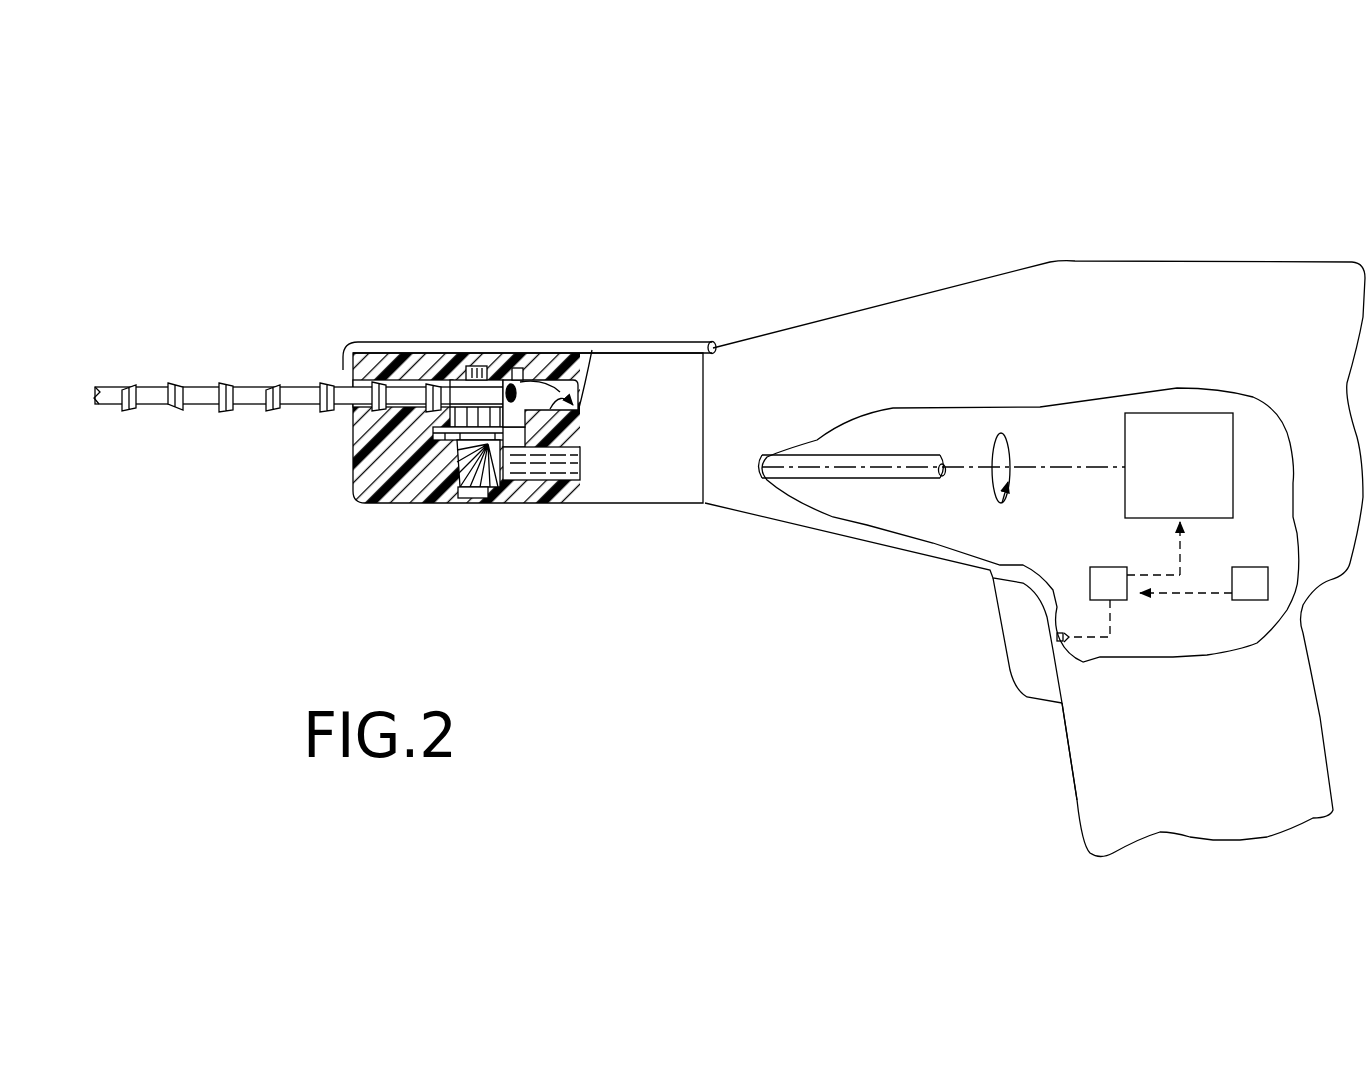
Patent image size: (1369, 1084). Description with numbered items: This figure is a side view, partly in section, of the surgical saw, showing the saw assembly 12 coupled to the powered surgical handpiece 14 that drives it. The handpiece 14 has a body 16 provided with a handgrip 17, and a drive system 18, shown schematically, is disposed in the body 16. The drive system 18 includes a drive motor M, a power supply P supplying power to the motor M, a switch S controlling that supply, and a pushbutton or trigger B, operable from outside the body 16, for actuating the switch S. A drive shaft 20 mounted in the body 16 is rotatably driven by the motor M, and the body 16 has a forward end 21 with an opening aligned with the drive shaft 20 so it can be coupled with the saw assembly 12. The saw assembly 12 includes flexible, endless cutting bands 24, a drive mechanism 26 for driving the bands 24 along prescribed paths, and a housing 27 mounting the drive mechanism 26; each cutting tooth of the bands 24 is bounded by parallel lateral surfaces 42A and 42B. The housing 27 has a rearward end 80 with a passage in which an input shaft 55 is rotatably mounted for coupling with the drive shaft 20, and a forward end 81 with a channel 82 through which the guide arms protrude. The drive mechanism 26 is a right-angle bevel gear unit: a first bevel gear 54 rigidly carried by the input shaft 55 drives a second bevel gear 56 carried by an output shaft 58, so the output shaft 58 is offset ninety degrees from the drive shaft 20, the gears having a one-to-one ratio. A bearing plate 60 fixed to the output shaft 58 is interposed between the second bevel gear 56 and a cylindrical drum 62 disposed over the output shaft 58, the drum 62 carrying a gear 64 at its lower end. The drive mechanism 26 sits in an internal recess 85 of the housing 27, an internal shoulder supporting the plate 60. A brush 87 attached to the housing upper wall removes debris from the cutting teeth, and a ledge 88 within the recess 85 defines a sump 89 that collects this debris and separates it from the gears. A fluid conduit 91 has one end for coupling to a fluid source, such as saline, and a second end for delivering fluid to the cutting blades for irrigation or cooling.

The saw assembly 12 is at (297, 512).
The powered surgical handpiece 14 is at (1168, 250).
The body 16 is at (1283, 300).
The handgrip 17 is at (1103, 755).
The drive system 18 is at (1115, 433).
The drive shaft 20 is at (863, 460).
The forward end 21 is at (737, 510).
The cutting bands 24 is at (197, 393).
The drive mechanism 26 is at (477, 490).
The housing 27 is at (683, 373).
The lateral surface 42A is at (225, 386).
The lateral surface 42B is at (223, 410).
The first bevel gear 54 is at (493, 490).
The input shaft 55 is at (578, 413).
The second bevel gear 56 is at (481, 455).
The output shaft 58 is at (475, 367).
The bearing plate 60 is at (440, 452).
The cylindrical drum 62 is at (533, 385).
The gear 64 is at (558, 382).
The rearward end 80 is at (706, 398).
The forward end 81 is at (350, 482).
The channel 82 is at (365, 380).
The internal recess 85 is at (470, 456).
The brush 87 is at (533, 382).
The ledge 88 is at (556, 470).
The sump 89 is at (583, 402).
The fluid conduit 91 is at (685, 342).
The pushbutton or trigger B is at (1018, 647).
The drive motor M is at (1179, 465).
The switch S is at (1108, 582).
The power supply P is at (1250, 582).